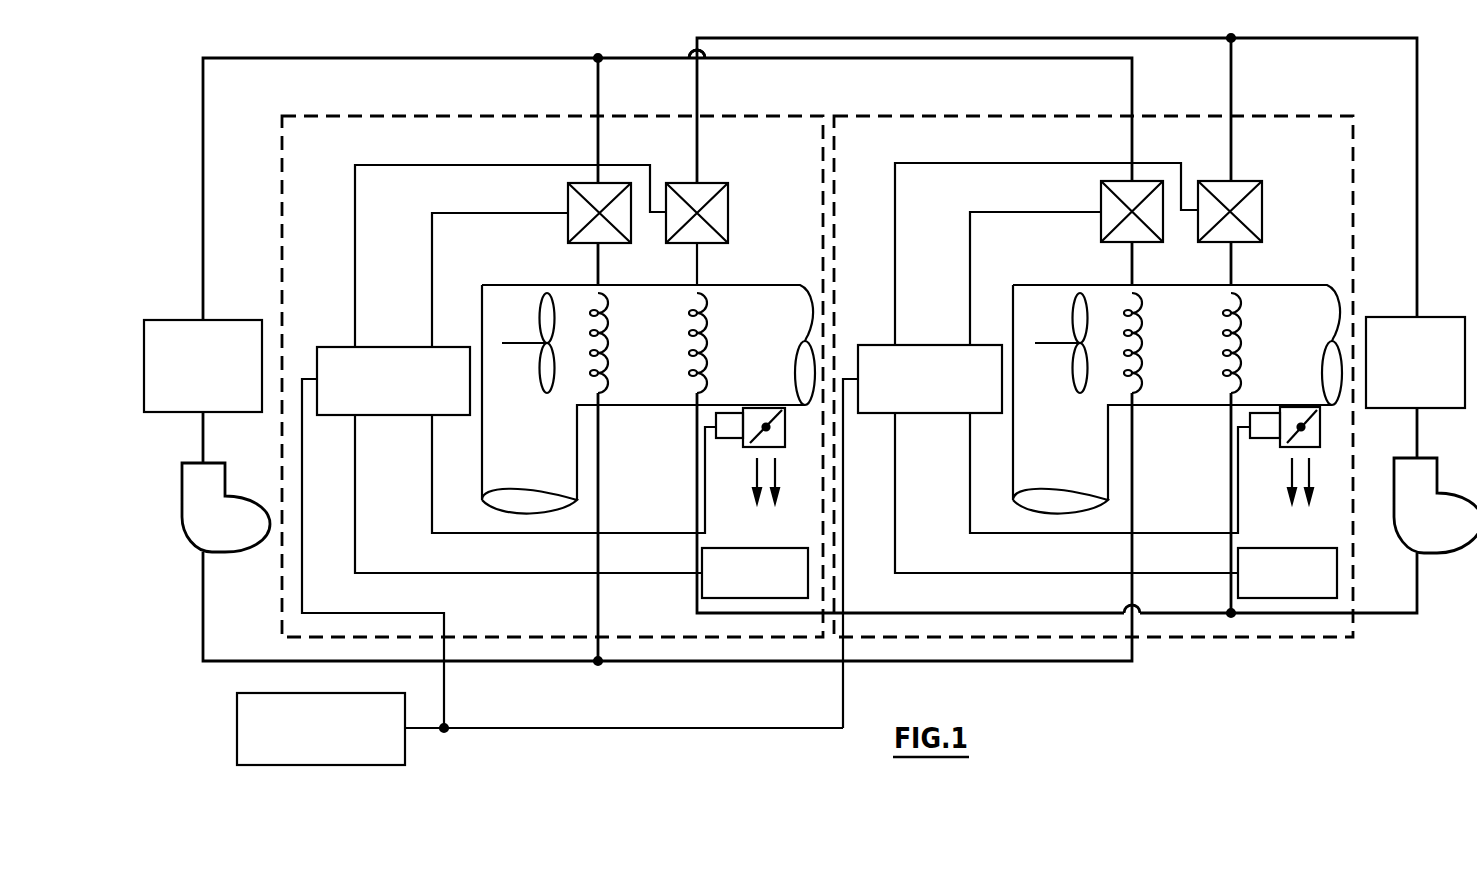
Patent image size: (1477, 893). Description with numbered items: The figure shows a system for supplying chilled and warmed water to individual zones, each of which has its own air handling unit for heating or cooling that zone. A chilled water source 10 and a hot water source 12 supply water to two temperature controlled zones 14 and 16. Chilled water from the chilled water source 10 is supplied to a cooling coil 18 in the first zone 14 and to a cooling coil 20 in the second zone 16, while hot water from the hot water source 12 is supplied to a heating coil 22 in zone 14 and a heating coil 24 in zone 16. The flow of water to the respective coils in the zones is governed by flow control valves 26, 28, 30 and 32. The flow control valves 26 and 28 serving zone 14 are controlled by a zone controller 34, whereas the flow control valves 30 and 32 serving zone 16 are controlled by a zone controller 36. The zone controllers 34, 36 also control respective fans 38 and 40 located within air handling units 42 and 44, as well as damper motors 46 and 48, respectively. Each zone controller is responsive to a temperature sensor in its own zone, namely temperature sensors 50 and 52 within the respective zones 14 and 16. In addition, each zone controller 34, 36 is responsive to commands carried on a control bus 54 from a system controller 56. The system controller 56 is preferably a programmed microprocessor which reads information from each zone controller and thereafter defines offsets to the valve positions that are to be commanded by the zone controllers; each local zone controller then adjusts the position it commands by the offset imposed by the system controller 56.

The chilled water source 10 is at (197, 318).
The hot water source 12 is at (1410, 316).
The temperature controlled zone 14 is at (282, 168).
The temperature controlled zone 16 is at (993, 116).
The cooling coil 18 is at (608, 353).
The cooling coil 20 is at (1142, 353).
The heating coil 22 is at (707, 353).
The heating coil 24 is at (1241, 353).
The flow control valve 26 is at (568, 229).
The flow control valve 28 is at (728, 212).
The flow control valve 30 is at (1101, 229).
The flow control valve 32 is at (1262, 212).
The zone controller 34 is at (345, 347).
The zone controller 36 is at (885, 345).
The fan 38 is at (543, 330).
The fan 40 is at (1076, 330).
The air handling unit 42 is at (737, 285).
The air handling unit 44 is at (1270, 285).
The damper motor 46 is at (722, 440).
The damper motor 48 is at (1257, 440).
The temperature sensor 50 is at (745, 548).
The temperature sensor 52 is at (1272, 548).
The control bus 54 is at (680, 728).
The system controller 56 is at (237, 728).